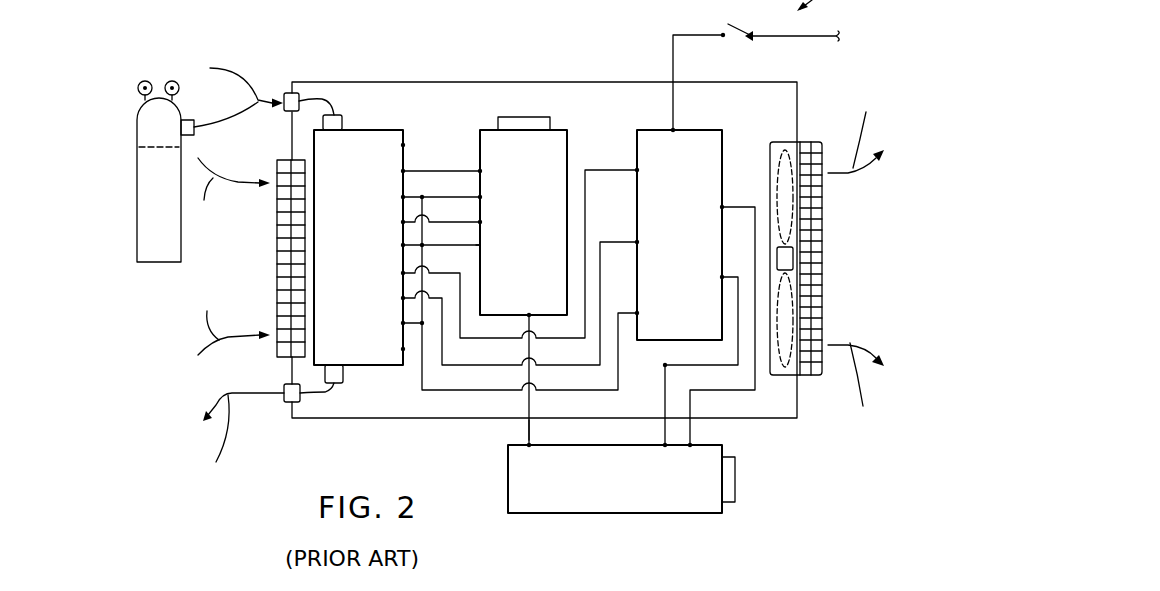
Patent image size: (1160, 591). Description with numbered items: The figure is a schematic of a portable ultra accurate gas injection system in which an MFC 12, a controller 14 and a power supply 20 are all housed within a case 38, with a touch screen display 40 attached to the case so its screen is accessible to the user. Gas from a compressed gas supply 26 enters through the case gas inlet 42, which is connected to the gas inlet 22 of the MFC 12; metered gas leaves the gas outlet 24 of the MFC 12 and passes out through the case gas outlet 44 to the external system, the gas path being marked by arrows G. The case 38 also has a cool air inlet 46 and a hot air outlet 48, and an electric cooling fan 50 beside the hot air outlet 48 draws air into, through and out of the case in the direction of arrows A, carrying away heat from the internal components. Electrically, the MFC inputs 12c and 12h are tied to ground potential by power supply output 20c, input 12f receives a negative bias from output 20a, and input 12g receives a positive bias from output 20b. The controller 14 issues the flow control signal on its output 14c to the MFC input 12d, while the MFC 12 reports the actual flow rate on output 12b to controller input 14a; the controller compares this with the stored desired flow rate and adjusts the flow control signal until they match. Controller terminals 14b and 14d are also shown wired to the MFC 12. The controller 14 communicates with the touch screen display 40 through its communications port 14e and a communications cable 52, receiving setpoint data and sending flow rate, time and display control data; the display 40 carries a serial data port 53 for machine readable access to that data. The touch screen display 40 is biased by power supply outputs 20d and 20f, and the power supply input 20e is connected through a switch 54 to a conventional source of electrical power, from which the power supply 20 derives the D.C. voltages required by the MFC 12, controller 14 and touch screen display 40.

The MFC 12 is at (370, 128).
The output 12b is at (424, 171).
The input 12c is at (503, 289).
The input 12d is at (424, 222).
The input 12f is at (505, 254).
The input 12g is at (502, 303).
The input 12h is at (396, 323).
The controller 14 is at (560, 128).
The input 14a is at (496, 171).
The port 14b is at (496, 197).
The output 14c is at (496, 222).
The port 14d is at (495, 245).
The communications port 14e is at (526, 369).
The power supply 20 is at (703, 128).
The output 20a is at (653, 171).
The output 20b is at (653, 242).
The output 20c is at (653, 313).
The output 20d is at (700, 358).
The input 20e is at (693, 95).
The output 20f is at (721, 322).
The gas inlet 22 is at (338, 100).
The gas outlet 24 is at (332, 392).
The compressed gas supply 26 is at (162, 262).
The case 38 is at (790, 422).
The touch screen display 40 is at (508, 490).
The case gas inlet 42 is at (284, 95).
The case gas outlet 44 is at (286, 403).
The cool air inlet 46 is at (277, 252).
The hot air outlet 48 is at (826, 145).
The electric cooling fan 50 is at (792, 368).
The communications cable 52 is at (524, 427).
The data port 53 is at (737, 482).
The switch 54 is at (745, 42).
The arrows A is at (541, 261).
The arrows G is at (238, 271).